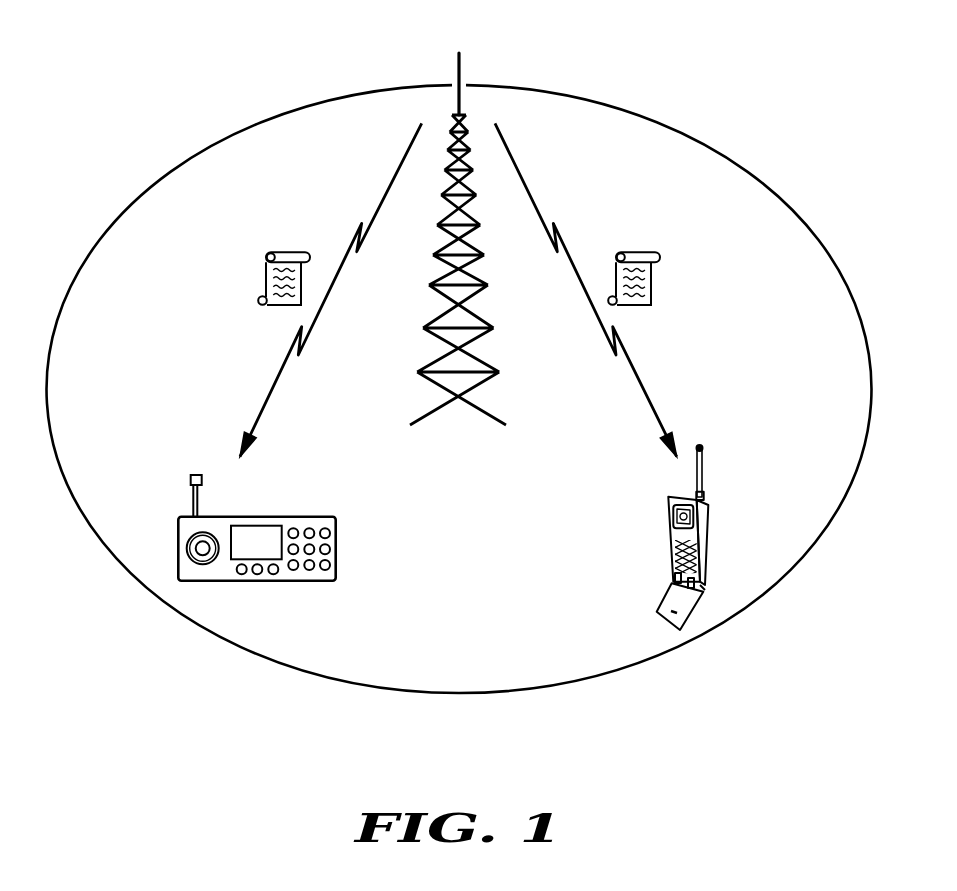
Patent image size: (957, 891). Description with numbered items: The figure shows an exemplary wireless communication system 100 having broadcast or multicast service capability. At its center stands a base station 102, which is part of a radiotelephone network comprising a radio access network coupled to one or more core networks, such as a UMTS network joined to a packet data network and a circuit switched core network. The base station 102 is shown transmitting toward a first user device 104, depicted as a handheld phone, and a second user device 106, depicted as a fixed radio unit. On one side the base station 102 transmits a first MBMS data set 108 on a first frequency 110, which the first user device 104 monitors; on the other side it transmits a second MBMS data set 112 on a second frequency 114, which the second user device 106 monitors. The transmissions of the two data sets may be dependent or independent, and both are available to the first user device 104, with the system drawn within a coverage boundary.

The wireless communication system 100 is at (760, 42).
The base station 102 is at (421, 350).
The first user device 104 is at (711, 540).
The second user device 106 is at (337, 549).
The first MBMS data set 108 is at (655, 284).
The first frequency 110 is at (645, 392).
The second MBMS data set 112 is at (265, 278).
The second frequency 114 is at (270, 393).